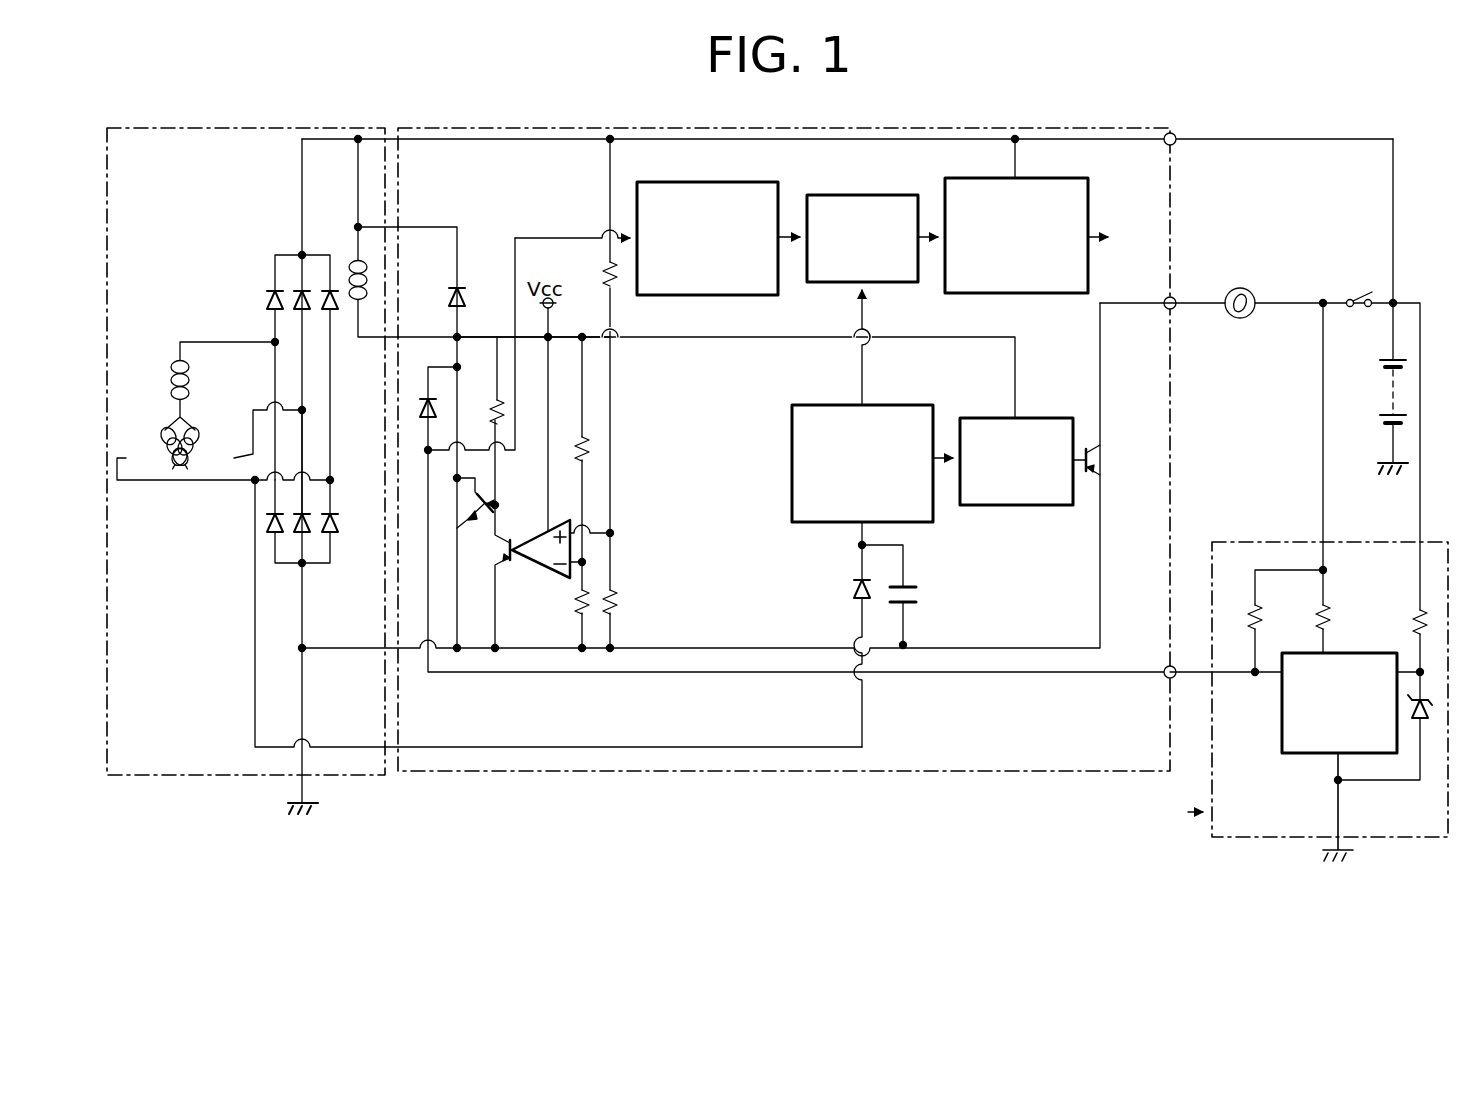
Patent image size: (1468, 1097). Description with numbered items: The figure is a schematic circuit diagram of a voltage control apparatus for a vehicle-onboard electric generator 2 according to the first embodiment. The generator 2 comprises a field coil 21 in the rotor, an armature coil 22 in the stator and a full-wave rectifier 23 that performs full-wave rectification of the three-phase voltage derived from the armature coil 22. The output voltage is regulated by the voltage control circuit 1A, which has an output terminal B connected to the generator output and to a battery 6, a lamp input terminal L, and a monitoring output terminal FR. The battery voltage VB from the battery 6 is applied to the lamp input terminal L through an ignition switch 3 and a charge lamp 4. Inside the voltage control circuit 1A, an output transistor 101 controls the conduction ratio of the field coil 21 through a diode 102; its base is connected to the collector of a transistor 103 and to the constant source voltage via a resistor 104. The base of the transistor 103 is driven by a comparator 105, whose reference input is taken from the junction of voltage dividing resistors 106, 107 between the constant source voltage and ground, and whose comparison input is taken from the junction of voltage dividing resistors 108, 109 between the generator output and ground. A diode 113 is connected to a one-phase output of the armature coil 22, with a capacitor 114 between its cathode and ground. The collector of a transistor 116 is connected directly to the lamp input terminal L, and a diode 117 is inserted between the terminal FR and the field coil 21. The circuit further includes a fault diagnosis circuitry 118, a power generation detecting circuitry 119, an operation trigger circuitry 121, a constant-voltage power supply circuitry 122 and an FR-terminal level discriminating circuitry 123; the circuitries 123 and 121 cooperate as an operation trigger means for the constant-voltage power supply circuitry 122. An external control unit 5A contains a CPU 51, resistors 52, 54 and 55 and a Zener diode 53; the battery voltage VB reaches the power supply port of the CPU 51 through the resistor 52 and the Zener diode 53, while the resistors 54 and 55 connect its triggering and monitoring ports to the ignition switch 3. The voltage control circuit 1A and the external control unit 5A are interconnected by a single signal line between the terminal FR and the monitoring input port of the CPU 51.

The voltage control circuit 1A is at (782, 774).
The vehicle-onboard electric generator 2 is at (179, 778).
The ignition switch 3 is at (1358, 292).
The charge lamp 4 is at (1240, 288).
The external control unit 5A is at (1282, 846).
The battery 6 is at (1390, 402).
The field coil 21 is at (356, 267).
The armature coil 22 is at (176, 379).
The full-wave rectifier 23 is at (290, 332).
The CPU 51 is at (1370, 652).
The resistor 52 is at (1418, 609).
The Zener diode 53 is at (1424, 720).
The resistor 54 is at (1320, 612).
The resistor 55 is at (1252, 604).
The output transistor 101 is at (488, 498).
The diode 102 is at (464, 292).
The transistor 103 is at (510, 564).
The resistor 104 is at (496, 396).
The comparator 105 is at (546, 560).
The voltage dividing resistor 106 is at (586, 436).
The voltage dividing resistor 107 is at (584, 614).
The voltage dividing resistor 108 is at (606, 264).
The voltage dividing resistor 109 is at (612, 616).
The diode 113 is at (854, 588).
The capacitor 114 is at (918, 594).
The transistor 116 is at (1088, 471).
The diode 117 is at (426, 396).
The fault diagnosis circuitry 118 is at (1040, 417).
The power generation detecting circuitry 119 is at (901, 405).
The operation trigger circuitry 121 is at (860, 194).
The constant-voltage power supply circuitry 122 is at (1030, 180).
The FR-terminal level discriminating circuitry 123 is at (665, 184).
The output terminal B is at (1176, 145).
The lamp input terminal L is at (1176, 313).
The monitoring output terminal FR is at (1184, 649).
The battery voltage VB is at (1390, 334).